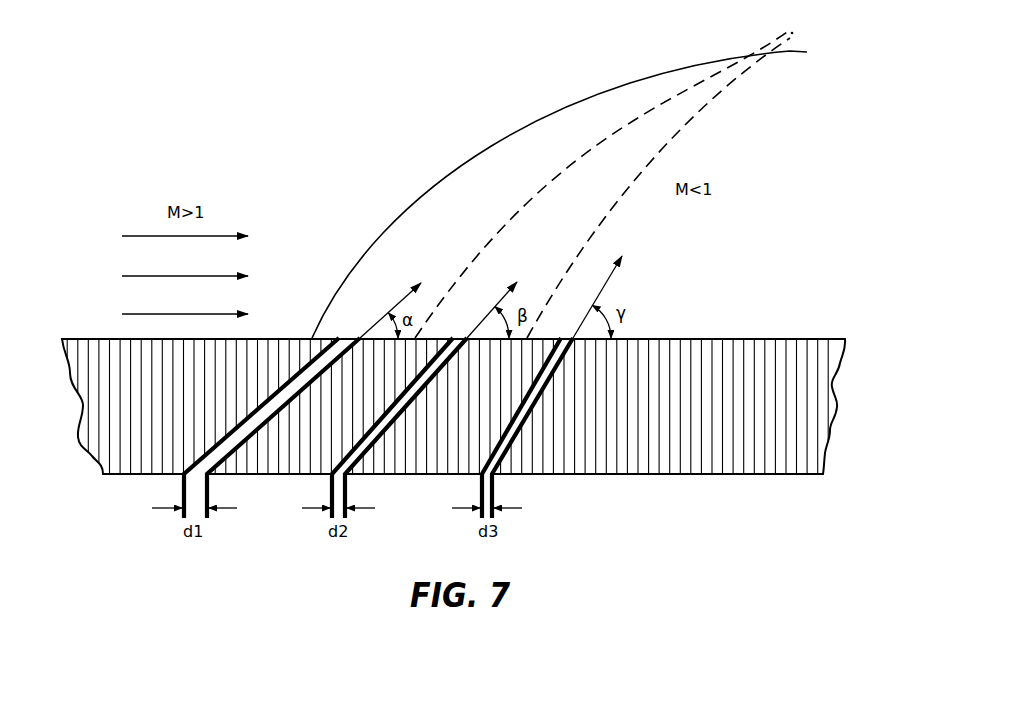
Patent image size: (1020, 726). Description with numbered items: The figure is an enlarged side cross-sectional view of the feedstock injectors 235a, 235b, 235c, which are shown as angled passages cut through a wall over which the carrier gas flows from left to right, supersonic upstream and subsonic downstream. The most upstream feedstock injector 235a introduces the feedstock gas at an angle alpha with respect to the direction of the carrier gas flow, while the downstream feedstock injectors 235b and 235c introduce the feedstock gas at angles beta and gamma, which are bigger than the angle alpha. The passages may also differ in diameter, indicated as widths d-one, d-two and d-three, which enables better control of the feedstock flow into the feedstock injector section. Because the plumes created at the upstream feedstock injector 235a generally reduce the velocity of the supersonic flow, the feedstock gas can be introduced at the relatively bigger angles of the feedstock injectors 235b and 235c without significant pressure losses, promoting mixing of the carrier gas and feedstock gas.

The feedstock injector 235a is at (245, 433).
The feedstock injector 235b is at (378, 433).
The feedstock injector 235c is at (525, 417).